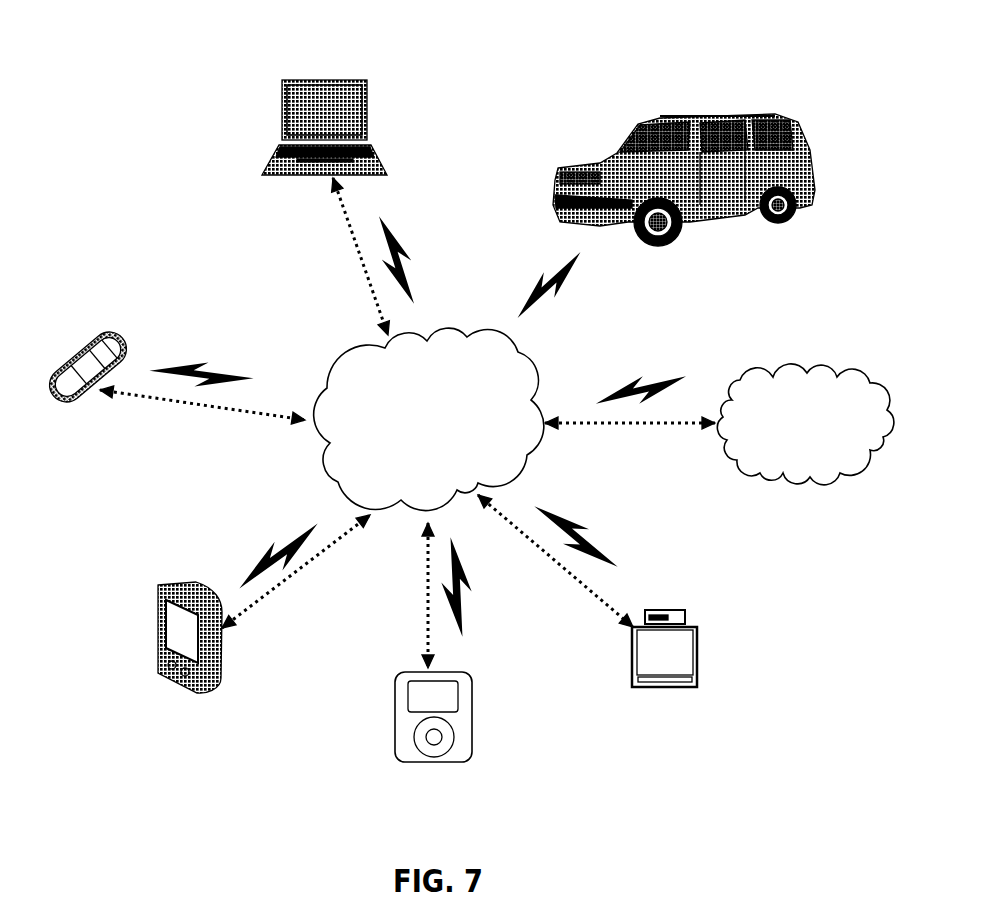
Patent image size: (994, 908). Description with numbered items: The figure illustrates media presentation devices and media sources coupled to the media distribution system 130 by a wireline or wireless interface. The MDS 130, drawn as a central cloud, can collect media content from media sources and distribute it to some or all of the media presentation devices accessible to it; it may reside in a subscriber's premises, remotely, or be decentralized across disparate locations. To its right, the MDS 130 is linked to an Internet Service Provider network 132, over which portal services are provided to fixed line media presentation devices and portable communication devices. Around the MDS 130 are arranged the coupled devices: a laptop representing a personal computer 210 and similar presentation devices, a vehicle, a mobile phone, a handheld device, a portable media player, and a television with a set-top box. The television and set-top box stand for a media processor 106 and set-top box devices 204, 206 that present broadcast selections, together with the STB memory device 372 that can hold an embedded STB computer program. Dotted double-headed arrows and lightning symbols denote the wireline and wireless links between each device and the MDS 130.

The media distribution system 130 is at (450, 452).
The Internet Service Provider network 132 is at (823, 471).
The personal computer 210 is at (347, 92).
The media processor 106 is at (744, 615).
The set-top box device 204 is at (744, 615).
The set-top box device 206 is at (744, 615).
The STB memory device 372 is at (662, 610).